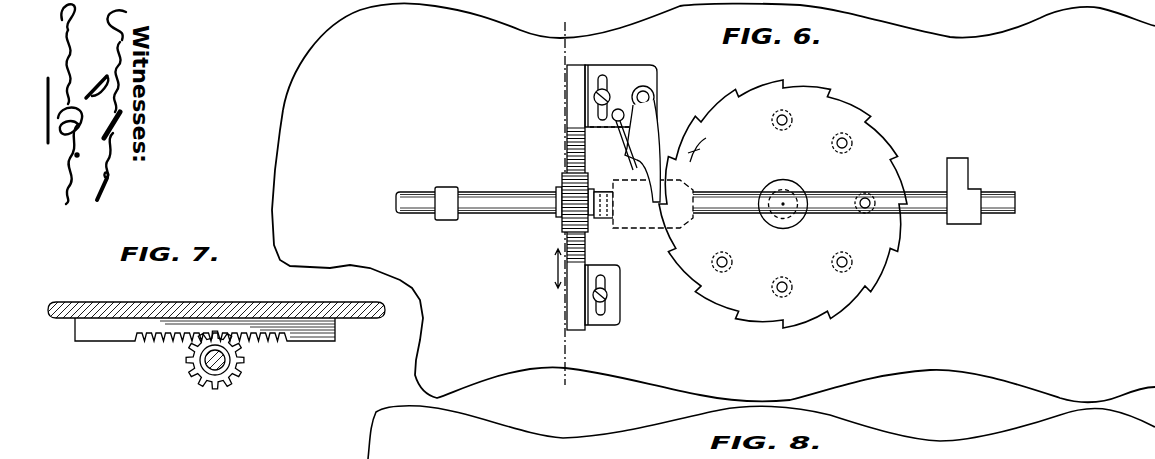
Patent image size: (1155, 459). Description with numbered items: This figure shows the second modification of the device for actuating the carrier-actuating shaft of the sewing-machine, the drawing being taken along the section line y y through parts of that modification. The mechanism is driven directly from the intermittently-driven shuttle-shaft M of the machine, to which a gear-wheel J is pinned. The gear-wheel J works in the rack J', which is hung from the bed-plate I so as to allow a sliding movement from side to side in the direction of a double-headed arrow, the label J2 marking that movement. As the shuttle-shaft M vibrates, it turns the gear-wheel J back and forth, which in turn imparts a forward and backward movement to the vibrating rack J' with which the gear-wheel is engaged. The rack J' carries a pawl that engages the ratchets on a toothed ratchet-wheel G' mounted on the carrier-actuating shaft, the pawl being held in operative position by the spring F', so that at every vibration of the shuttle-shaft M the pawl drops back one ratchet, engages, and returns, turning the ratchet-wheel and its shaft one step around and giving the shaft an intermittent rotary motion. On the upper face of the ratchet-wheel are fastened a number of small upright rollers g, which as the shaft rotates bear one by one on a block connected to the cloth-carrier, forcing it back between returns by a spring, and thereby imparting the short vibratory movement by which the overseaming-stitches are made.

In FIG. 6, the bed-plate I is at (713, 202).
In FIG. 7, the bed-plate I is at (246, 292).
In FIG. 6, the gear-wheel J is at (558, 198).
In FIG. 7, the gear-wheel J is at (221, 360).
In FIG. 6, the rack J' is at (558, 197).
In FIG. 7, the rack J' is at (205, 340).
In FIG. 6, the direction of rack movement J2 is at (547, 268).
In FIG. 6, the shuttle-shaft M is at (530, 198).
In FIG. 7, the shuttle-shaft M is at (227, 359).
In FIG. 6, the spring F' is at (644, 144).
In FIG. 6, the ratchet disc G' is at (783, 204).
In FIG. 6, the upright rollers g is at (830, 143).
In FIG. 6, the section line y y is at (564, 200).